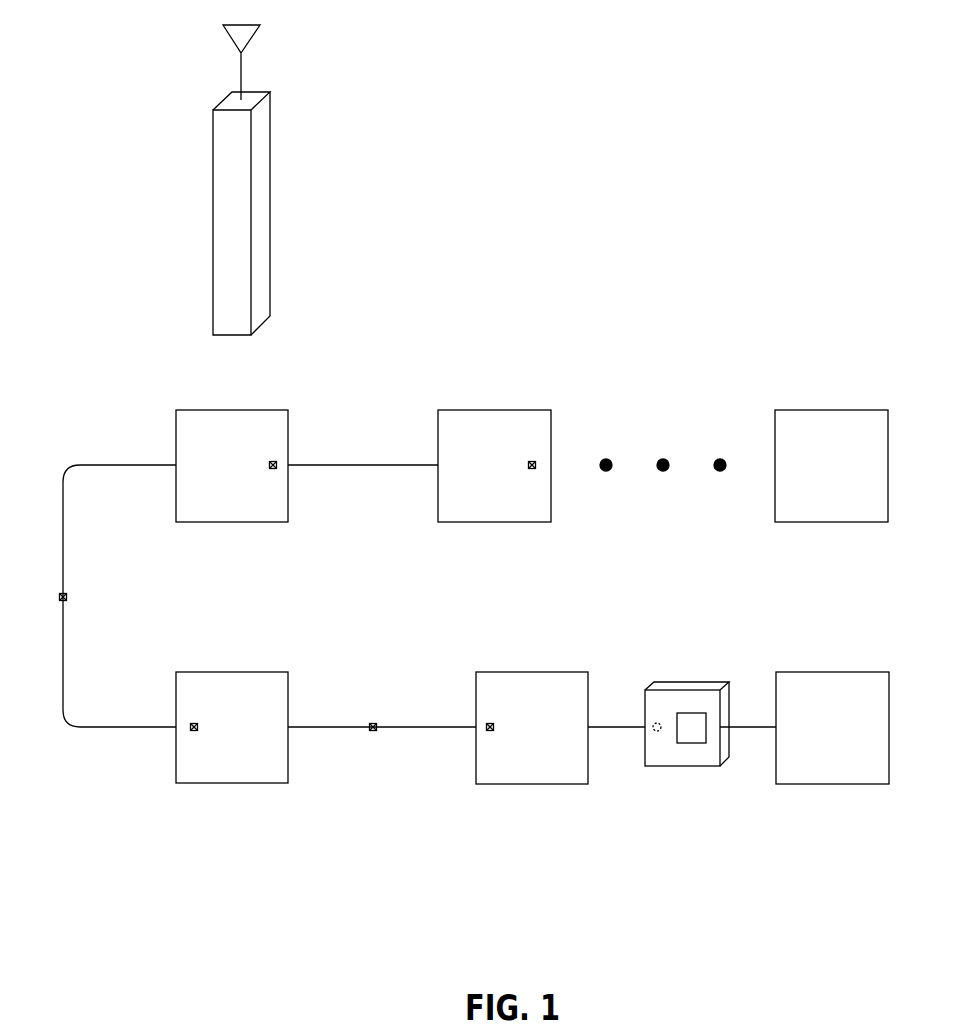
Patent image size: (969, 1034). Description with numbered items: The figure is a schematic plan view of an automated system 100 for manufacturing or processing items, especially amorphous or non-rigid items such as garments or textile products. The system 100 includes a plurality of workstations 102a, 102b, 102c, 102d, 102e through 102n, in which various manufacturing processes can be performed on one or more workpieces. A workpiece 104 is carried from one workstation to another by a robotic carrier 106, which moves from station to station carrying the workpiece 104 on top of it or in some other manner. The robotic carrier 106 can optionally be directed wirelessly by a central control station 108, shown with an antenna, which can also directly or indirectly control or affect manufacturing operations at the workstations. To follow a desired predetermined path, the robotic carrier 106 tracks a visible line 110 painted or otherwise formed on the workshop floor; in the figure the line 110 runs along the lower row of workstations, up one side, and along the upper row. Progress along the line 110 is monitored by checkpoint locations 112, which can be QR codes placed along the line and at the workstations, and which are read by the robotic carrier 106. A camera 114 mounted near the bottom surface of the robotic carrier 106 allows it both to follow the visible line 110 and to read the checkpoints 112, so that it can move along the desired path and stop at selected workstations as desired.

The automated system 100 is at (575, 222).
The workstation 102a is at (832, 728).
The workstation 102b is at (532, 728).
The workstation 102c is at (232, 727).
The workstation 102d is at (232, 466).
The workstation 102e is at (494, 466).
The workstation 102n is at (831, 466).
The workpiece 104 is at (687, 712).
The robotic carrier 106 is at (700, 768).
The central control station 108 is at (255, 175).
The visible line 110 is at (65, 558).
The checkpoint location 112 is at (278, 462).
The camera 114 is at (656, 722).